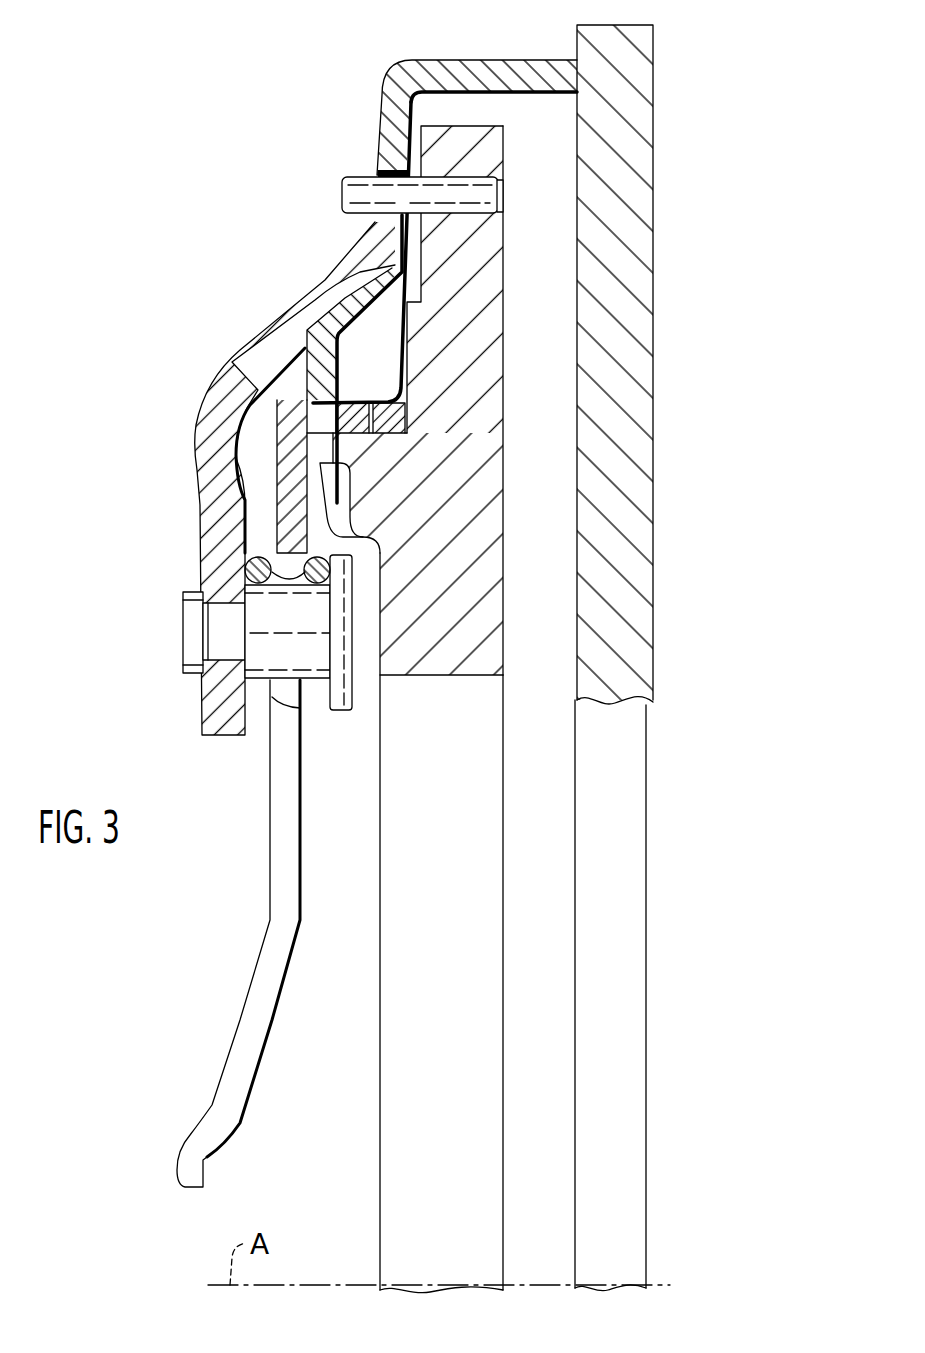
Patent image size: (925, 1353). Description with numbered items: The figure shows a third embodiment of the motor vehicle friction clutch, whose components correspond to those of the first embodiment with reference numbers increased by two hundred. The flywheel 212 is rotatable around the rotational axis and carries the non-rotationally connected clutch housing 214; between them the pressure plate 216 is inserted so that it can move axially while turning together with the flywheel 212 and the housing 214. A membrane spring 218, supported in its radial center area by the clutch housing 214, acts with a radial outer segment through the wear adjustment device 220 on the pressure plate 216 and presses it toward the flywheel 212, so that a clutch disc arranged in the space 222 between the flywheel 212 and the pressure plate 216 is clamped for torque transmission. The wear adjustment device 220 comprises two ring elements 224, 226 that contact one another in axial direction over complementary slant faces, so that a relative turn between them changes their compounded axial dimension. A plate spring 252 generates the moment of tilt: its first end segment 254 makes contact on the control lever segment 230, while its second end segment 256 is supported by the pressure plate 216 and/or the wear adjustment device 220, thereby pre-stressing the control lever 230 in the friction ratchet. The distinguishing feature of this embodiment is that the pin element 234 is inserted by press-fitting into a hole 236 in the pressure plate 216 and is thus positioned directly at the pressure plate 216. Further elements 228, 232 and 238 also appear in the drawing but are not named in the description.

The flywheel 212 is at (632, 1013).
The clutch housing 214 is at (205, 455).
The pressure plate 216 is at (390, 1137).
The membrane spring 218 is at (270, 960).
The wear adjustment device 220 is at (372, 476).
The space 222 is at (514, 500).
The ring element 224 is at (382, 404).
The ring element 226 is at (367, 436).
The clutch cover 228 is at (363, 82).
The control lever segment 230 is at (356, 287).
The cover cap 232 is at (517, 65).
The pin element 234 is at (342, 192).
The hole 236 is at (468, 217).
The spacer 238 is at (368, 178).
The plate spring 252 is at (362, 293).
The first end segment 254 is at (413, 117).
The second end segment 256 is at (305, 348).